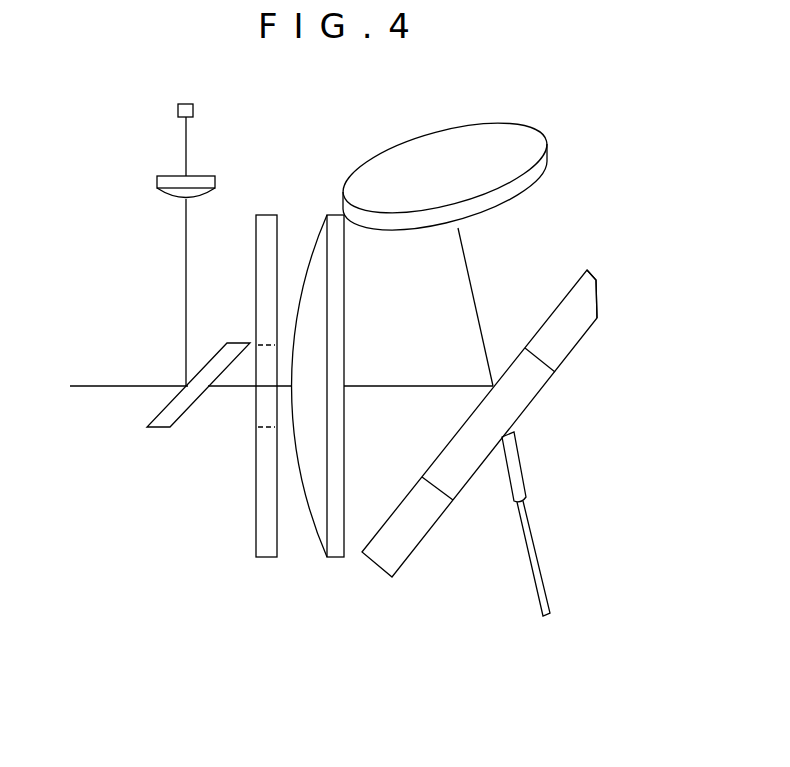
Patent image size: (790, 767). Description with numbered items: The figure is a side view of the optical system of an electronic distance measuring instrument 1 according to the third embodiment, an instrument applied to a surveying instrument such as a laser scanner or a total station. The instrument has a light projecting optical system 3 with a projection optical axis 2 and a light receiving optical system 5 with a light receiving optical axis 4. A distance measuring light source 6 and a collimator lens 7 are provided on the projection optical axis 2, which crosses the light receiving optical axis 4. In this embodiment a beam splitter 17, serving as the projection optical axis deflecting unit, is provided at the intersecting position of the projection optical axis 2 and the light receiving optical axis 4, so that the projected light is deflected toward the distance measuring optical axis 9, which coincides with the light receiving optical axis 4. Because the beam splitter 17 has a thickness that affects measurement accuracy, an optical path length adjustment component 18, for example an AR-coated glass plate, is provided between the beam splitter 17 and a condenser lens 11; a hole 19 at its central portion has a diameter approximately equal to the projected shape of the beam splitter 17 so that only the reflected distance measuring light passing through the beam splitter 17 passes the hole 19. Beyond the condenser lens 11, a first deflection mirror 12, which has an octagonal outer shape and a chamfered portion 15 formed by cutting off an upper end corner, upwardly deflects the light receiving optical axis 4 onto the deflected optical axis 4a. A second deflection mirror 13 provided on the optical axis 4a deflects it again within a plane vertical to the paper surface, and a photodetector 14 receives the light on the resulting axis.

The electronic distance measuring instrument 1 is at (342, 121).
The projection optical axis 2 is at (186, 260).
The light projecting optical system 3 is at (140, 153).
The light receiving optical axis 4 is at (386, 386).
The optical axis as deflected 4a is at (477, 303).
The light receiving optical system 5 is at (545, 242).
The distance measuring light source 6 is at (193, 108).
The collimator lens 7 is at (203, 176).
The distance measuring optical axis 9 is at (95, 386).
The condenser lens 11 is at (317, 242).
The first deflection mirror 12 is at (428, 535).
The second deflection mirror 13 is at (549, 146).
The photodetector 14 is at (517, 448).
The chamfered portion 15 is at (597, 296).
The beam splitter 17 is at (180, 418).
The optical path length adjustment component 18 is at (256, 533).
The hole 19 is at (265, 407).